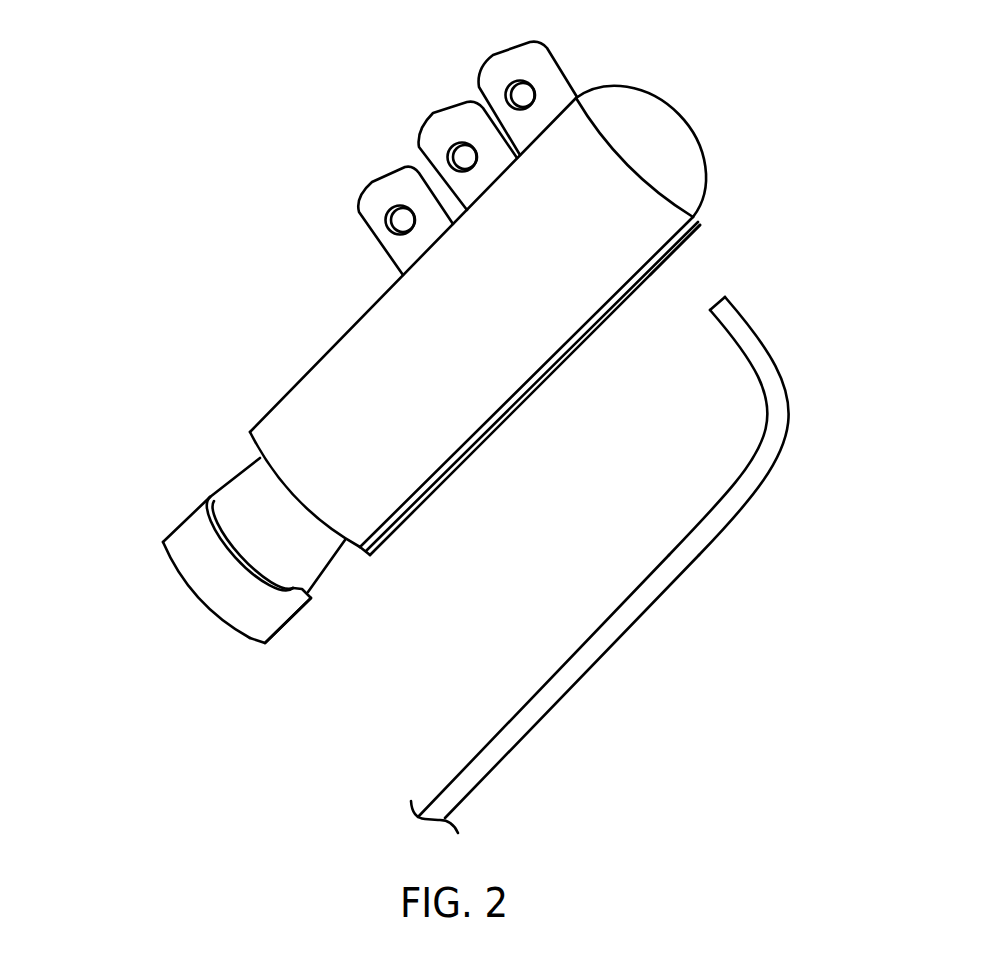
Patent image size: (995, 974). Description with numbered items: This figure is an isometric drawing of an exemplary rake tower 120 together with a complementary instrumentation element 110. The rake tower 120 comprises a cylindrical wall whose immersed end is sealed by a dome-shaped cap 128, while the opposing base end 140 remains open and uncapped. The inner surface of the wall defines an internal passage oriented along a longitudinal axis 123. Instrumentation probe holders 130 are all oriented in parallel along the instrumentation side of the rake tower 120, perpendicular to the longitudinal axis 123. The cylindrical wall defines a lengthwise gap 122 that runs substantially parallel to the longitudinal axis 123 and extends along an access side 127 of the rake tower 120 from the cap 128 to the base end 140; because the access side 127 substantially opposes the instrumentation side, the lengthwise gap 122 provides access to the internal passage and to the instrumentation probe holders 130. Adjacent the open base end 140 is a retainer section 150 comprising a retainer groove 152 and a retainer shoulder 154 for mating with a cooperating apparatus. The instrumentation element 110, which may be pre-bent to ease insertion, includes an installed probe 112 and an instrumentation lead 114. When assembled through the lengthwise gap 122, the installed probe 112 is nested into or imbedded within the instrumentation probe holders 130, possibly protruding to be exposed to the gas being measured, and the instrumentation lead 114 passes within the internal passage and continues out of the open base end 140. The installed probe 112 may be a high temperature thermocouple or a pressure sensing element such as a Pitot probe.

The instrumentation element 110 is at (637, 555).
The installed probe 112 is at (747, 305).
The instrumentation lead 114 is at (613, 651).
The rake tower 120 is at (404, 337).
The lengthwise gap 122 is at (510, 405).
The longitudinal axis 123 is at (201, 600).
The access side 127 is at (703, 226).
The dome-shaped cap 128 is at (706, 93).
The instrumentation probe holders 130 is at (474, 56).
The base end 140 is at (230, 574).
The retainer section 150 is at (251, 446).
The retainer groove 152 is at (294, 544).
The retainer shoulder 154 is at (254, 603).